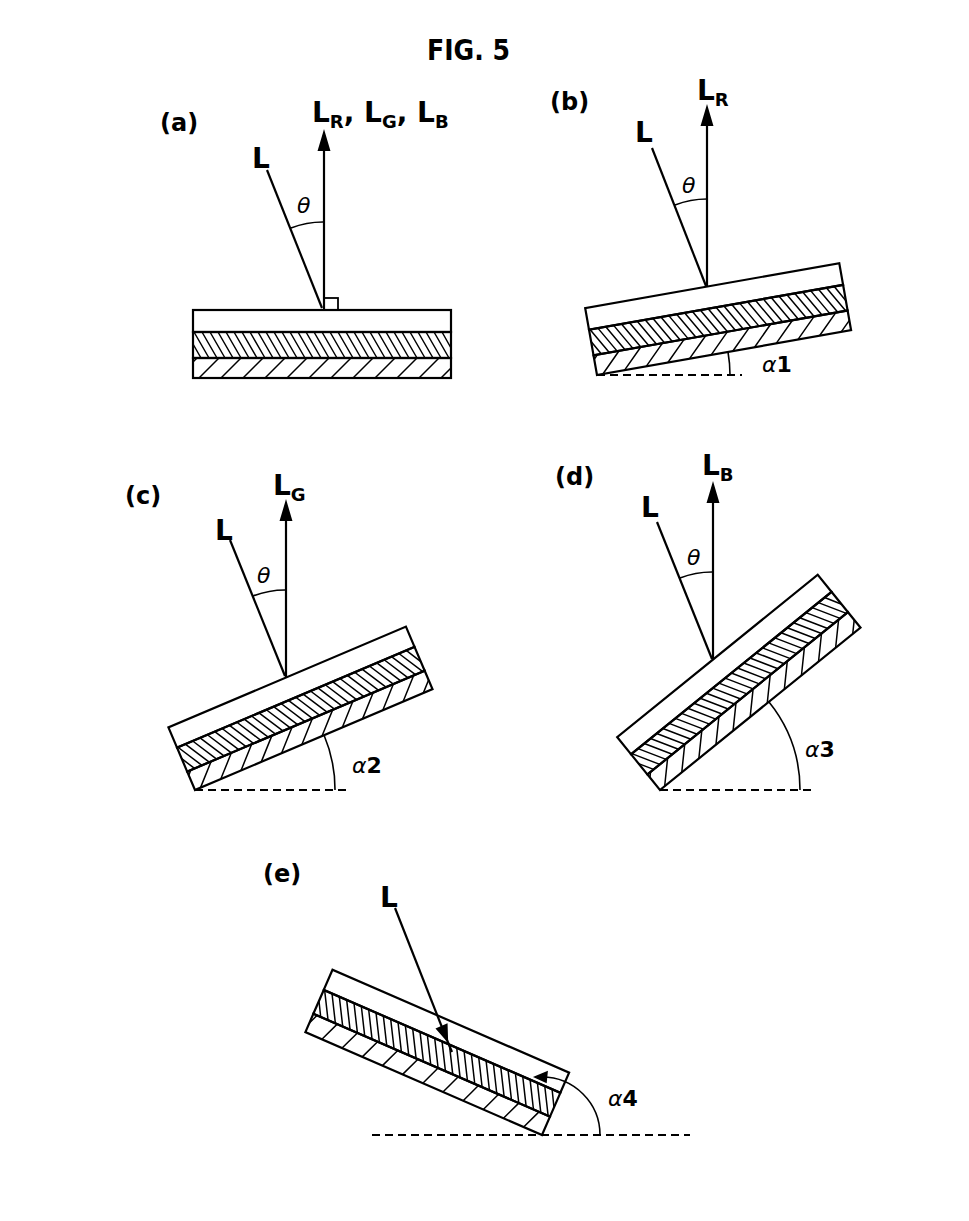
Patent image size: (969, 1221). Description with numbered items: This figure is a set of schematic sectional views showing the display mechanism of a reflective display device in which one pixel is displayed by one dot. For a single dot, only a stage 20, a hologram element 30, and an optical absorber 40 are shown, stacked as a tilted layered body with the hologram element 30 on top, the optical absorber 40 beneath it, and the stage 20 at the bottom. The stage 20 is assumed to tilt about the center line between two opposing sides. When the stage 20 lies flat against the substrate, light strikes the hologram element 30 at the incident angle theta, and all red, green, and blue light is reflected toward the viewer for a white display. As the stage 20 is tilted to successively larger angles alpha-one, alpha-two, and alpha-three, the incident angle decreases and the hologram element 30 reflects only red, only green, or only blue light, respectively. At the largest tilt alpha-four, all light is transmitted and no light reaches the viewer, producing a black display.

The stage 20 is at (195, 370).
The hologram element 30 is at (200, 322).
The optical absorber 40 is at (197, 345).